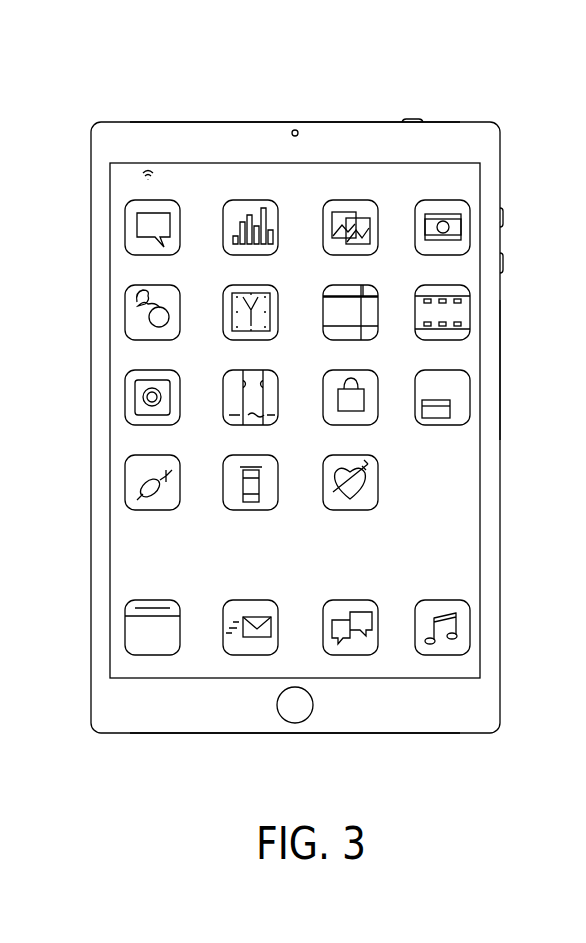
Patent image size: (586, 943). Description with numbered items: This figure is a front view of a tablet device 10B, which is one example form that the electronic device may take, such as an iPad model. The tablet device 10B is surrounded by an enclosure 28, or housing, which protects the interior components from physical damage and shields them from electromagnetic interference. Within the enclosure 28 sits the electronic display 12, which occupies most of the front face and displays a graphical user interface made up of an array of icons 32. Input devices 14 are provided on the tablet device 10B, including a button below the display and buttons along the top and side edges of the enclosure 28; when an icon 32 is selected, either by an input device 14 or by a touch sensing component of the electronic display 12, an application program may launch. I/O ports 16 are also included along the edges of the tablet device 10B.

The tablet device 10B is at (100, 80).
The electronic display 12 is at (482, 422).
The input device 14 is at (414, 121).
The I/O port 16 is at (168, 122).
The enclosure 28 is at (500, 372).
The icons 32 is at (455, 501).